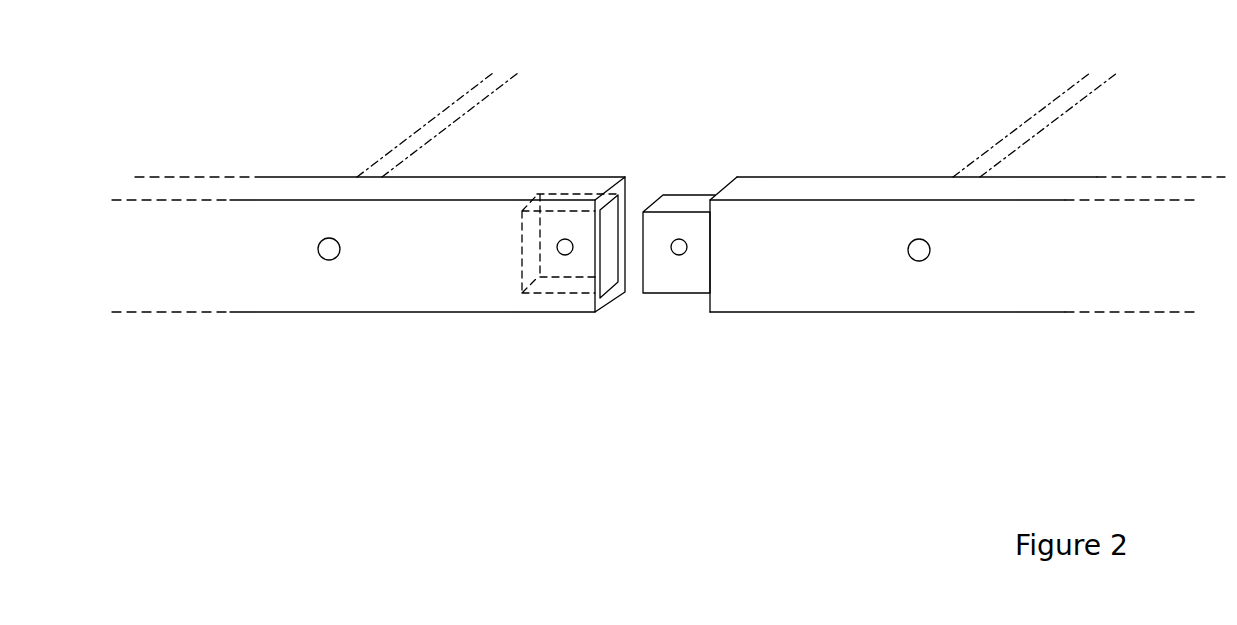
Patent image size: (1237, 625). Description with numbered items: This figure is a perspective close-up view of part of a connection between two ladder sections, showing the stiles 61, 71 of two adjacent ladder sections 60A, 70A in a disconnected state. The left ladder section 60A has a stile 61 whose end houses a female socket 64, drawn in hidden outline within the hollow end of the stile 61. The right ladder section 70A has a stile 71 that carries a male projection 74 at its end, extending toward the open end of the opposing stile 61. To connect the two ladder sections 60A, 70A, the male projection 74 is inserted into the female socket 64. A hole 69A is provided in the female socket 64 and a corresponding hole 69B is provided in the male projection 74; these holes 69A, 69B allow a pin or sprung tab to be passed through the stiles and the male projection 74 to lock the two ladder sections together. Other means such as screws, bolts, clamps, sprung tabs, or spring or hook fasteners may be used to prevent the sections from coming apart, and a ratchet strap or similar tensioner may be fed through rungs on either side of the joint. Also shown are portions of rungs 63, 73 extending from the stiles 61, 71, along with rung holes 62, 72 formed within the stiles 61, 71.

The ladder section 60A is at (279, 103).
The stile 61 is at (380, 282).
The rung hole 62 is at (317, 250).
The rung 63 is at (455, 122).
The female socket 64 is at (575, 210).
The hole 69A is at (566, 256).
The ladder section 70A is at (939, 100).
The stile 71 is at (815, 288).
The rung hole 72 is at (932, 252).
The rung 73 is at (1078, 92).
The male projection 74 is at (677, 199).
The hole 69B is at (681, 256).